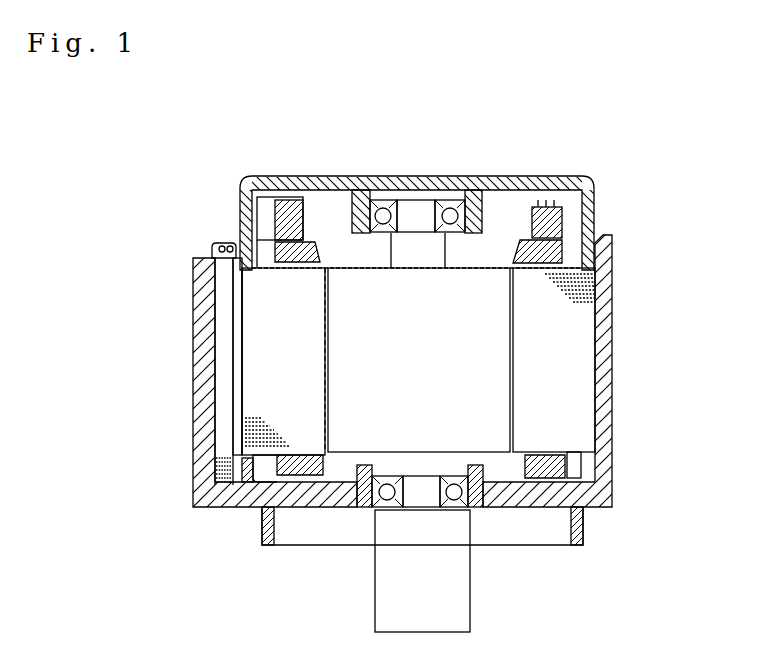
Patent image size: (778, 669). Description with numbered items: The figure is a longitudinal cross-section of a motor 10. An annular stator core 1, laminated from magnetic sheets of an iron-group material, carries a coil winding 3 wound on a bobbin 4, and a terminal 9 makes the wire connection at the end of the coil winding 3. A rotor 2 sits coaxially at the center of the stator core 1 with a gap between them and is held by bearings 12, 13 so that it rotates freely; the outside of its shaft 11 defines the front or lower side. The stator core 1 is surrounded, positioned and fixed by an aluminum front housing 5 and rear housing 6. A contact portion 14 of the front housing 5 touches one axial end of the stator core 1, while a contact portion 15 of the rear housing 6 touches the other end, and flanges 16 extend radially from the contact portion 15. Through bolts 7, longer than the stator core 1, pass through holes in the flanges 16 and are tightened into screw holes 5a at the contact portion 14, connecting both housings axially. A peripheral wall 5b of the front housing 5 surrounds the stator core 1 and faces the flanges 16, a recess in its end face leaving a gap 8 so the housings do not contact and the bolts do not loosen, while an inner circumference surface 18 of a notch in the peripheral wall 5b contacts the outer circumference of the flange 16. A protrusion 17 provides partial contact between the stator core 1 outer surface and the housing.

The stator core 1 is at (588, 327).
The rotor 2 is at (495, 414).
The coil winding 3 is at (236, 205).
The bobbin 4 is at (596, 240).
The front housing 5 is at (588, 272).
The screw hole 5a is at (235, 468).
The peripheral wall 5b is at (222, 320).
The rear housing 6 is at (457, 190).
The through bolt 7 is at (243, 316).
The gap 8 is at (240, 263).
The terminal 9 is at (577, 205).
The motor 10 is at (302, 177).
The shaft 11 is at (463, 573).
The bearing 12 is at (368, 510).
The bearing 13 is at (372, 190).
The contact portion 14 is at (228, 440).
The contact portion 15 is at (238, 290).
The flange 16 is at (226, 245).
The protrusion 17 is at (240, 330).
The inner circumference surface 18 is at (212, 258).